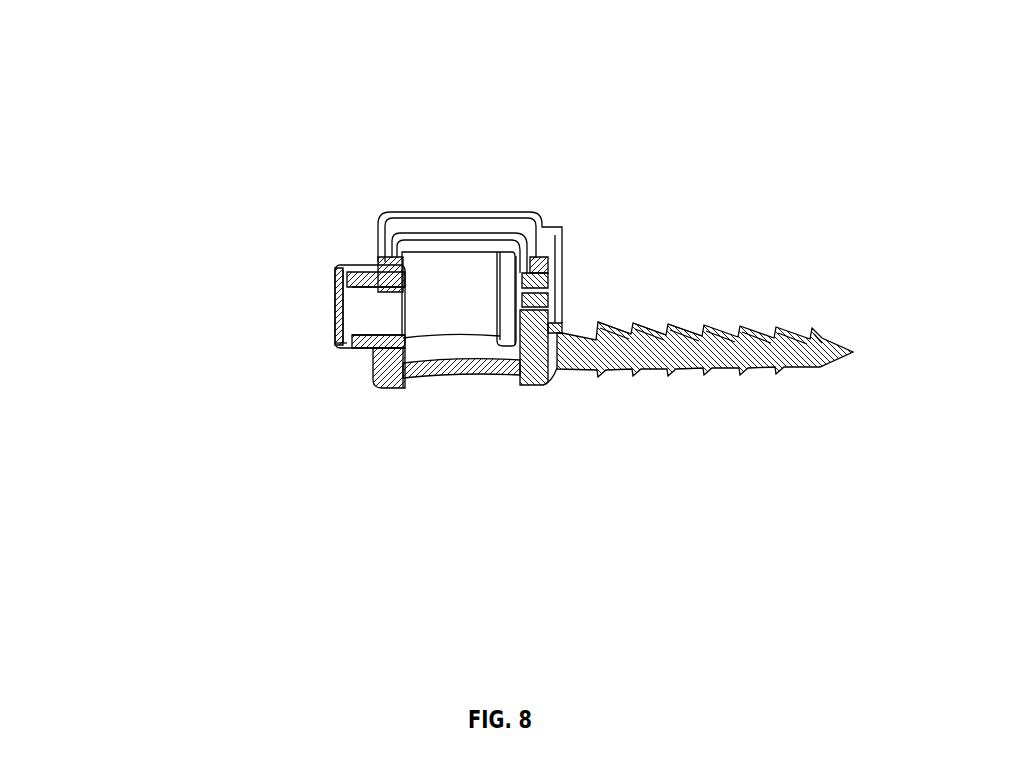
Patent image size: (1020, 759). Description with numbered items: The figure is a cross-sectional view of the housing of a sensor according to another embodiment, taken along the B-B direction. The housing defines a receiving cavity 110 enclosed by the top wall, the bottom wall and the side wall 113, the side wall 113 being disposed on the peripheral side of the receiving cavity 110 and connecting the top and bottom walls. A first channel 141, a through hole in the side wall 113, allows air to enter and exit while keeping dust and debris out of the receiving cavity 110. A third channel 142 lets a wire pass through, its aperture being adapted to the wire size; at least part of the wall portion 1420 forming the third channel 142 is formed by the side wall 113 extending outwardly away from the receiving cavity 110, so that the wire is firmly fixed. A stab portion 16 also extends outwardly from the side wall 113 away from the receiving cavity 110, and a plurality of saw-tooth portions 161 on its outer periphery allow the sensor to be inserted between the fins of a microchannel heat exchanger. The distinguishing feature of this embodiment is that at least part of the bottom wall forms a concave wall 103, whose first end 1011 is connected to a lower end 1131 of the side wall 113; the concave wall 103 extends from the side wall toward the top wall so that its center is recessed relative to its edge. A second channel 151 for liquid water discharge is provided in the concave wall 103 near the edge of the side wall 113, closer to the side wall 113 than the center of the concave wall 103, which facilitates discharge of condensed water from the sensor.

The side wall 113 is at (447, 212).
The receiving cavity 110 is at (483, 297).
The first channel 141 is at (555, 305).
The third channel 142 is at (343, 263).
The wall portion 1420 is at (328, 343).
The lower end of the side wall 1131 is at (373, 378).
The first end of the concave wall 1011 is at (403, 377).
The concave wall 103 is at (439, 345).
The second channel 151 is at (448, 370).
The stab portion 16 is at (727, 367).
The saw-tooth portions 161 is at (592, 350).